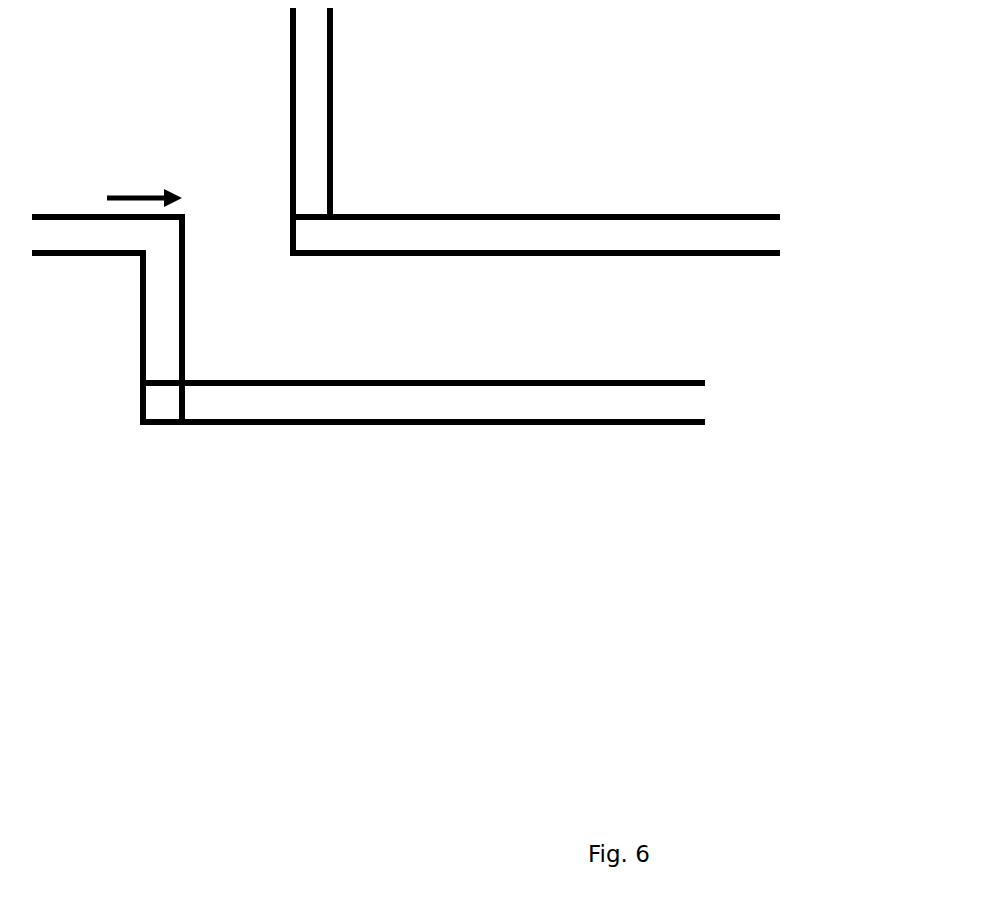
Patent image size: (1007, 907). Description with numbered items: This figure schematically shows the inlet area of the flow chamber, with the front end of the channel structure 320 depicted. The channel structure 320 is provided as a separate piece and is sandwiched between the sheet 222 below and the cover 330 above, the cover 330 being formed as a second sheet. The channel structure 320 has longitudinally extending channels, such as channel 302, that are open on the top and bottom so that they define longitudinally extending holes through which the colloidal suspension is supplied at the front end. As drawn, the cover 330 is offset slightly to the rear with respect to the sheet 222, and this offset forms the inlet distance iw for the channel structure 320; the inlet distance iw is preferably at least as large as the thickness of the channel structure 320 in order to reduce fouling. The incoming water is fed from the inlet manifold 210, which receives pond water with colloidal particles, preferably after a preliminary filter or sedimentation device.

The inlet manifold 210 is at (312, 103).
The cover 330 is at (555, 235).
The inlet distance iw is at (302, 198).
The channel structure 320 is at (162, 328).
The channel 302 is at (368, 327).
The sheet 222 is at (648, 402).